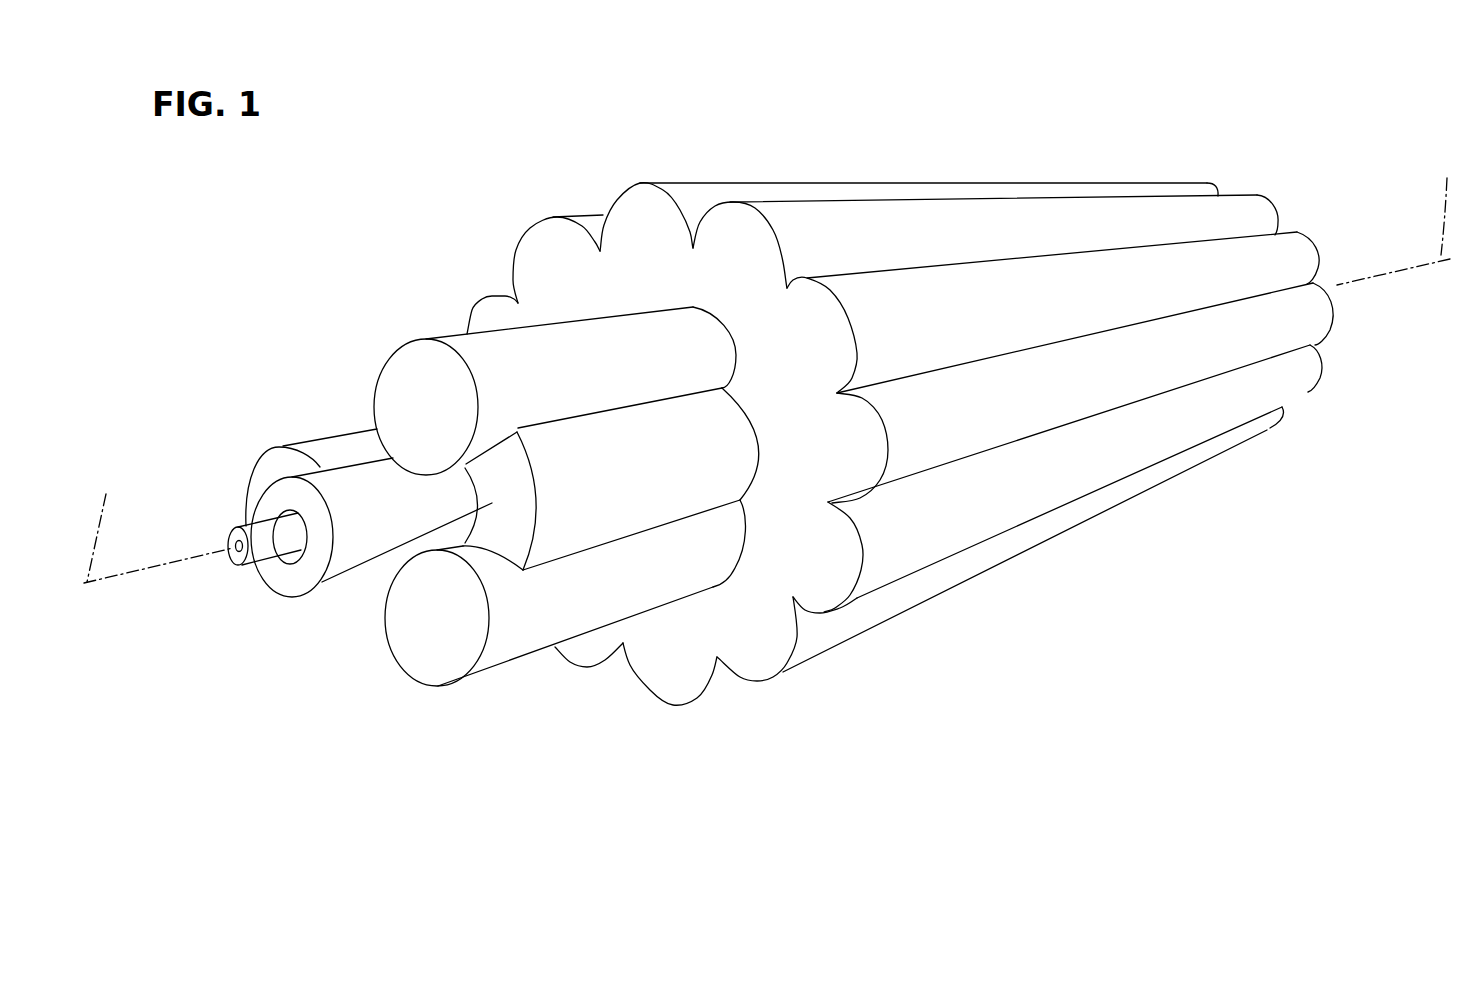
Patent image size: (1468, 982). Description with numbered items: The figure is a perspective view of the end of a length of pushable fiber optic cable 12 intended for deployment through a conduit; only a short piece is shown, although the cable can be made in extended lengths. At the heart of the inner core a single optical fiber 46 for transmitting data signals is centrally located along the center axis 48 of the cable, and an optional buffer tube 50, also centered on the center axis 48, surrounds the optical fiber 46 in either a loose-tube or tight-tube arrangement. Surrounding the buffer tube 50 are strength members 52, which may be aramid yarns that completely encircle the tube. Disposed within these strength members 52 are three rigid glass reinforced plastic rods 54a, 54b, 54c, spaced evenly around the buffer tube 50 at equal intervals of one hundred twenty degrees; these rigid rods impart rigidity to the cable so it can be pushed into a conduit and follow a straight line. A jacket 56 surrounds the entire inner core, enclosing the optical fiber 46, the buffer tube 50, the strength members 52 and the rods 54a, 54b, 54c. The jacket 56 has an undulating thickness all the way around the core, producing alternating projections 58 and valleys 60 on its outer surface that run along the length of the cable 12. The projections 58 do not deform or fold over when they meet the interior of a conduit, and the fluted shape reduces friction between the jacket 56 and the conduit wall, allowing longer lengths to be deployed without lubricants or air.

The pushable fiber optic cable 12 is at (874, 116).
The optical fiber 46 is at (247, 527).
The center axis 48 is at (770, 367).
The buffer tube 50 is at (337, 572).
The strength members 52 is at (385, 452).
The glass reinforced plastic rod 54a is at (262, 468).
The glass reinforced plastic rod 54b is at (462, 347).
The glass reinforced plastic rod 54c is at (503, 653).
The jacket 56 is at (550, 245).
The projections 58 is at (1273, 205).
The valleys 60 is at (1277, 231).